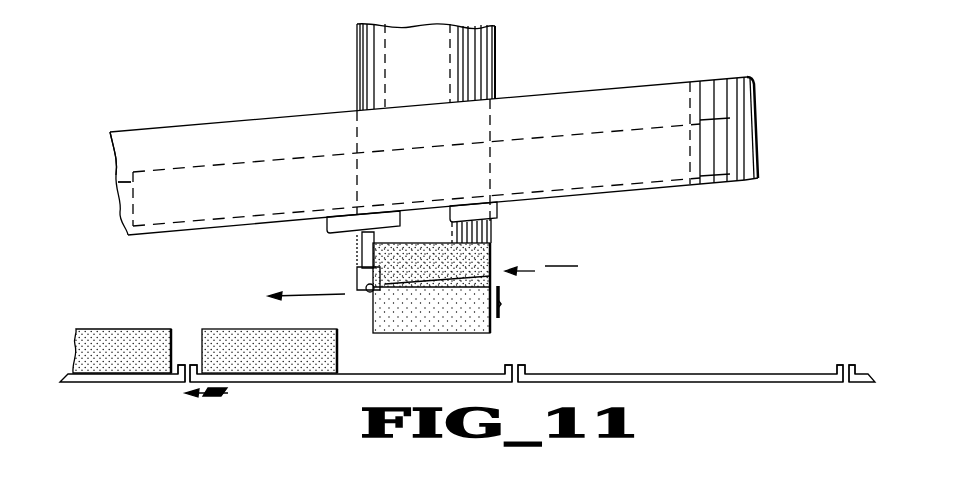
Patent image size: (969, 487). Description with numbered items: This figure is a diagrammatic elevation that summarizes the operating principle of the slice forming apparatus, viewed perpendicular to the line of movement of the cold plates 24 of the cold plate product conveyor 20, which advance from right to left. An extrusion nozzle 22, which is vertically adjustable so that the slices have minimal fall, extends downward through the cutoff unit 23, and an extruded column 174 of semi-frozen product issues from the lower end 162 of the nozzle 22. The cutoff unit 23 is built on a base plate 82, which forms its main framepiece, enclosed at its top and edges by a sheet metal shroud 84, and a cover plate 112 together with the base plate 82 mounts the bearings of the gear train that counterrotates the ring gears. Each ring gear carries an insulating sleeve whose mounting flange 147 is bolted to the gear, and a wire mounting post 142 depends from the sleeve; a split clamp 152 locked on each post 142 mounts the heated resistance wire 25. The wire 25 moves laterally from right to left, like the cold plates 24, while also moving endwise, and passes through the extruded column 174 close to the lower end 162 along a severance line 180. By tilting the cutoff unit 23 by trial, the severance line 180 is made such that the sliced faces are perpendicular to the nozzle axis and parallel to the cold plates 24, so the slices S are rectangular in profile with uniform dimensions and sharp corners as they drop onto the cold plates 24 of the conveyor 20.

The cold plate product conveyor 20 is at (761, 375).
The extrusion nozzle 22 is at (358, 95).
The cutoff unit 23 is at (683, 78).
The cold plates 24 is at (104, 375).
The heated resistance wire 25 is at (365, 291).
The base plate 82 is at (116, 184).
The sheet metal shroud 84 is at (197, 124).
The cover plate 112 is at (742, 184).
The wire mounting post 142 is at (364, 251).
The mounting flange 147 is at (327, 226).
The split clamp 152 is at (357, 272).
The lower end of the extrusion nozzle 162 is at (495, 243).
The extruded column 174 is at (492, 258).
The severance line 180 is at (492, 283).
The slices S is at (211, 329).